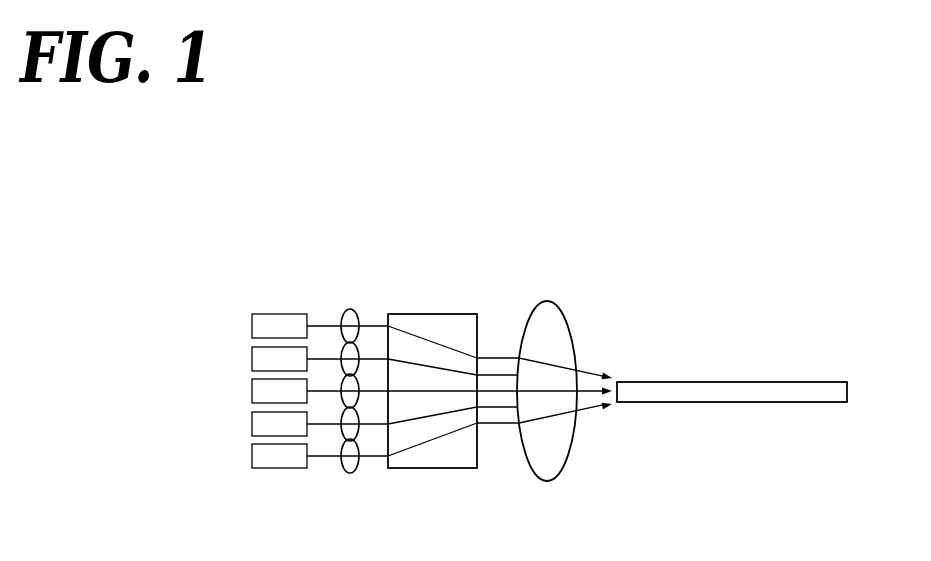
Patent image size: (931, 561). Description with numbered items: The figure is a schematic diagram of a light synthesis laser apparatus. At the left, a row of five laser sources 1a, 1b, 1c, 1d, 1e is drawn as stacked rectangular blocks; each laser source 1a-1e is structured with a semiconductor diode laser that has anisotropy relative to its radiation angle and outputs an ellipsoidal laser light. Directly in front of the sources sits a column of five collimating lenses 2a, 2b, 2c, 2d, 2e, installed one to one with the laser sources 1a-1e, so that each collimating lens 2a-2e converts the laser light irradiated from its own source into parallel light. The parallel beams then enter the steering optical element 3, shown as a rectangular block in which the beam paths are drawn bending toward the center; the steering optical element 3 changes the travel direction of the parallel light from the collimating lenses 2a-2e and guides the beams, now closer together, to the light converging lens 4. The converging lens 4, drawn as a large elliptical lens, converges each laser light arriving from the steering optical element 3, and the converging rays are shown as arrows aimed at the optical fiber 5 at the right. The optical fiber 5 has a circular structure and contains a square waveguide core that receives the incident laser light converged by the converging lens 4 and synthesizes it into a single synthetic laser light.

The laser source 1a is at (252, 326).
The laser source 1b is at (252, 359).
The laser source 1c is at (252, 391).
The laser source 1d is at (252, 424).
The laser source 1e is at (252, 456).
The collimating lens 2a is at (346, 309).
The collimating lens 2b is at (359, 345).
The collimating lens 2c is at (360, 402).
The collimating lens 2d is at (357, 434).
The collimating lens 2e is at (344, 472).
The steering optical element 3 is at (425, 314).
The light converging lens 4 is at (565, 318).
The optical fiber 5 is at (733, 382).